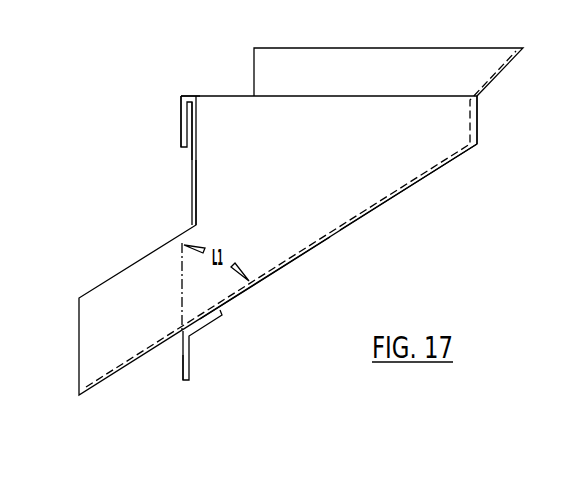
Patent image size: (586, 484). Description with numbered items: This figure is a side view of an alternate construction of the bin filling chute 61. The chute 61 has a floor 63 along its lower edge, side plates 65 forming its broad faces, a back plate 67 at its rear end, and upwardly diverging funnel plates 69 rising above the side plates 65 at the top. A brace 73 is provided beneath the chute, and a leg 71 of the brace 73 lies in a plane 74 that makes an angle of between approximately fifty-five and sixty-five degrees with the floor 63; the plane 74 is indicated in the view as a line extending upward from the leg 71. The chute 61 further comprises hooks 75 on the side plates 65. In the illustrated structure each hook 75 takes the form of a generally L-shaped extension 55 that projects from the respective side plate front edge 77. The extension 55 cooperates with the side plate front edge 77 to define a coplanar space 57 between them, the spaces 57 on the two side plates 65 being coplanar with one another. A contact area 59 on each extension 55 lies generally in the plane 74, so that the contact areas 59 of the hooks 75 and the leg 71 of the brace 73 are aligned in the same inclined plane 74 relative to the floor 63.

The L-shaped extension 55 is at (181, 118).
The coplanar space 57 is at (192, 138).
The contact area 59 is at (181, 108).
The bin filling chute 61 is at (413, 187).
The floor 63 is at (278, 272).
The side plate 65 is at (332, 205).
The back plate 67 is at (477, 125).
The funnel plate 69 is at (413, 78).
The leg 71 is at (190, 367).
The brace 73 is at (182, 373).
The plane 74 is at (178, 270).
The hook 75 is at (181, 96).
The side plate front edge 77 is at (193, 202).